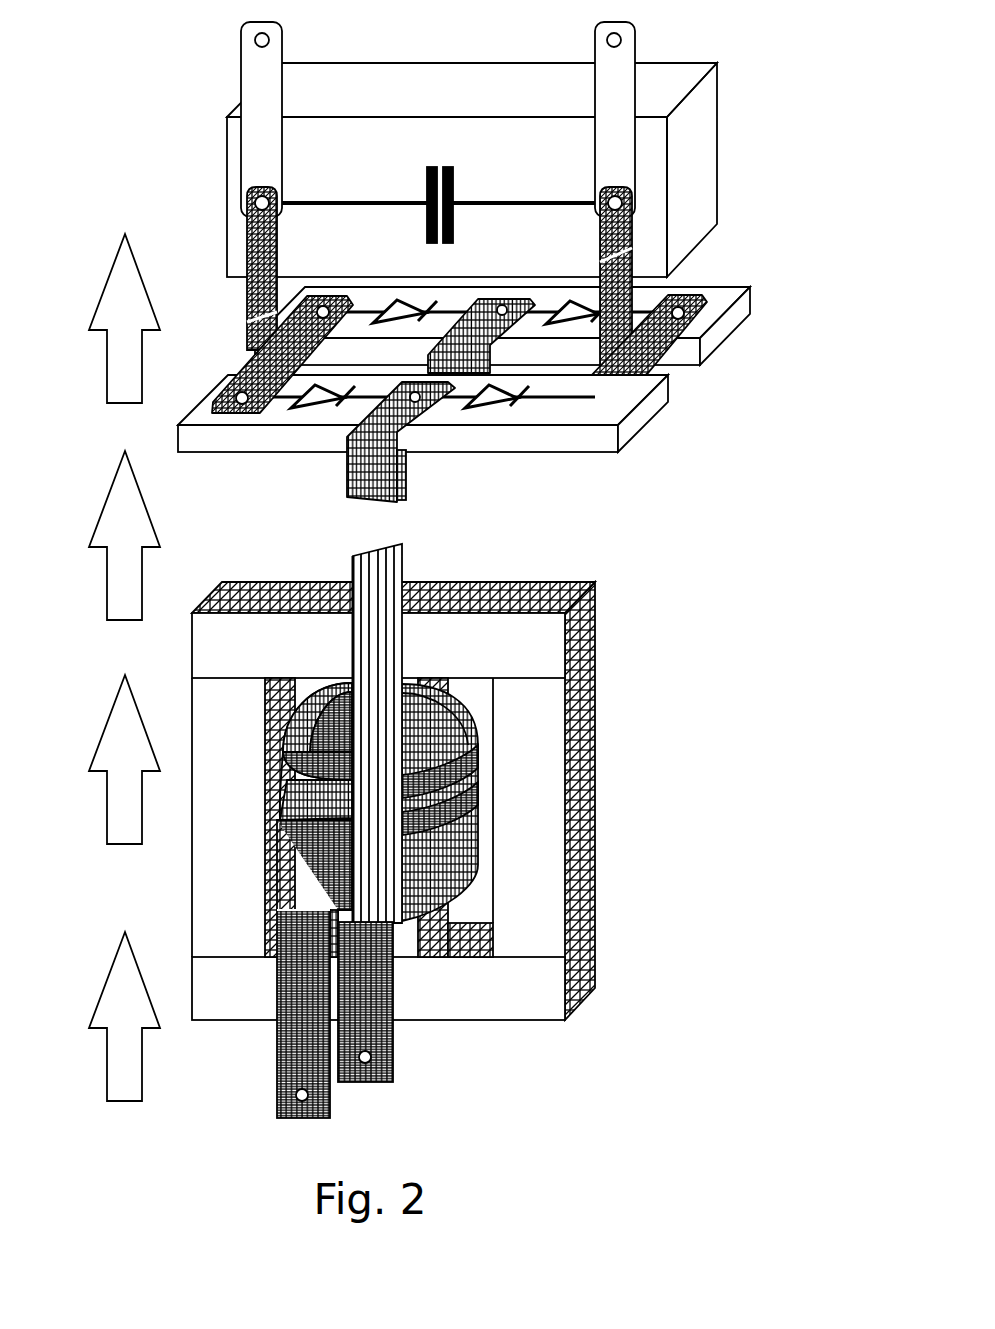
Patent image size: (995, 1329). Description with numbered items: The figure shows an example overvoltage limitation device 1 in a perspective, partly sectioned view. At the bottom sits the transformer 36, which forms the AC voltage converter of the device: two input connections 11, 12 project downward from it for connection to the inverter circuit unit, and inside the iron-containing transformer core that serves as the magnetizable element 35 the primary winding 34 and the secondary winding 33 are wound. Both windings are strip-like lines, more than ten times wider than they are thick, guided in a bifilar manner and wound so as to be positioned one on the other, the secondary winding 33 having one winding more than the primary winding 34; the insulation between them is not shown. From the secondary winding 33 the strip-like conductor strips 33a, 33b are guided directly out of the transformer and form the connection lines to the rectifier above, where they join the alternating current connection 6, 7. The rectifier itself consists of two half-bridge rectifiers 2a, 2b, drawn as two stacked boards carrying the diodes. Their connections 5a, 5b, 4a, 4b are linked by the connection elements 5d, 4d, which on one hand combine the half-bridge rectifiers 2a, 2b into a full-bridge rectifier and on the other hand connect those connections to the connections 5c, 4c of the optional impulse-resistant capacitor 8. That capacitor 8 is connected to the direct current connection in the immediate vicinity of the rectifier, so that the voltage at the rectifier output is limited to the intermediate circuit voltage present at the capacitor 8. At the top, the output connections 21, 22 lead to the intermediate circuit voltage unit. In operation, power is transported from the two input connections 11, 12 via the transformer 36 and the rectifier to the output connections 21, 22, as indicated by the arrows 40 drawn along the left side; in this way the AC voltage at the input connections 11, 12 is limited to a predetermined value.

The overvoltage limitation device 1 is at (491, 565).
The half-bridge rectifier 2a is at (563, 447).
The half-bridge rectifier 2b is at (688, 378).
The connection 4a is at (600, 405).
The connection 4b is at (684, 316).
The connection 4c is at (632, 208).
The connection element 4d is at (632, 262).
The connection 5a is at (238, 393).
The connection 5b is at (323, 305).
The connection 5c is at (247, 205).
The connection element 5d is at (260, 238).
The alternating current connection 6 is at (420, 404).
The alternating current connection 7 is at (532, 298).
The impulse-resistant capacitor 8 is at (427, 172).
The input connection 11 is at (298, 1096).
The input connection 12 is at (372, 1057).
The output connection 21 is at (268, 40).
The output connection 22 is at (608, 40).
The secondary winding 33 is at (443, 823).
The conductor strip 33a is at (404, 548).
The conductor strip 33b is at (380, 588).
The primary winding 34 is at (333, 883).
The magnetizable element 35 is at (575, 815).
The transformer 36 is at (463, 801).
The arrows 40 is at (150, 512).